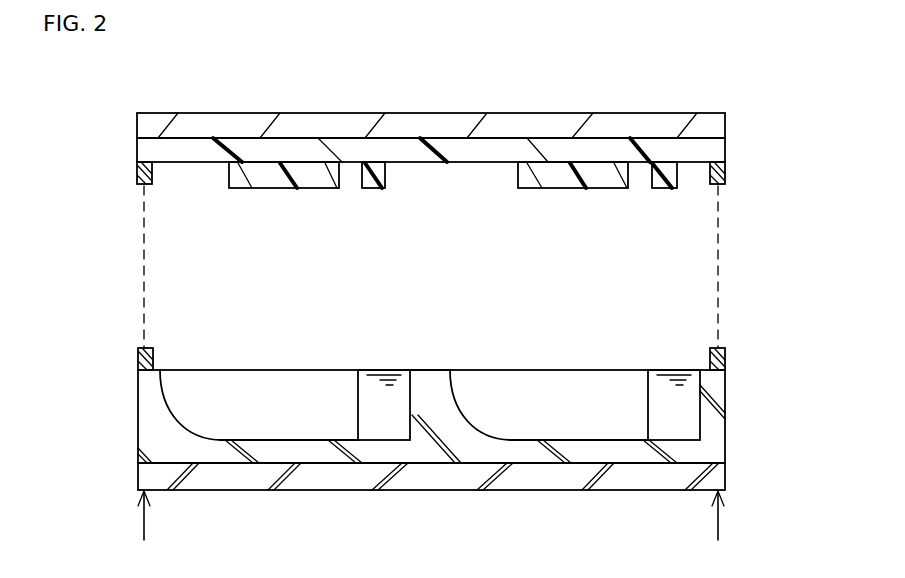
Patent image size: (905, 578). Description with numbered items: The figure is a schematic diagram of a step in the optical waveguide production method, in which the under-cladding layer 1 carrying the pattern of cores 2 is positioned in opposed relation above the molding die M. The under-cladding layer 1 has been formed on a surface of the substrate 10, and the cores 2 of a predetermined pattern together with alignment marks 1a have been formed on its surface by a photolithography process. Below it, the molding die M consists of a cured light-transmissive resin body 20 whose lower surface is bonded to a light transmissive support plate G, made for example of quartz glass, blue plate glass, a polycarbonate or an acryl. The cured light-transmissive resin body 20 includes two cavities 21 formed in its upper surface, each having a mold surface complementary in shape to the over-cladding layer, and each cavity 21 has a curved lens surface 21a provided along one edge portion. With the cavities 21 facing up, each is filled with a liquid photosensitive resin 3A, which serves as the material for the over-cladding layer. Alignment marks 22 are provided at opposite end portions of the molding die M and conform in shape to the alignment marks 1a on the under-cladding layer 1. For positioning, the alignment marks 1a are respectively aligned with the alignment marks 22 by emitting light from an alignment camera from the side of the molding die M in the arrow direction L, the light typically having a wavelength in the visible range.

The under-cladding layer 1 is at (718, 150).
The alignment marks 1a is at (137, 173).
The cores 2 is at (370, 188).
The substrate 10 is at (600, 115).
The cured light-transmissive resin body 20 is at (432, 390).
The cavities 21 is at (358, 372).
The curved lens surface 21a is at (178, 408).
The alignment marks 22 is at (137, 358).
The liquid photosensitive resin 3A is at (288, 382).
The molding die M is at (133, 412).
The arrow direction L is at (143, 519).
The light transmissive support plate G is at (198, 481).